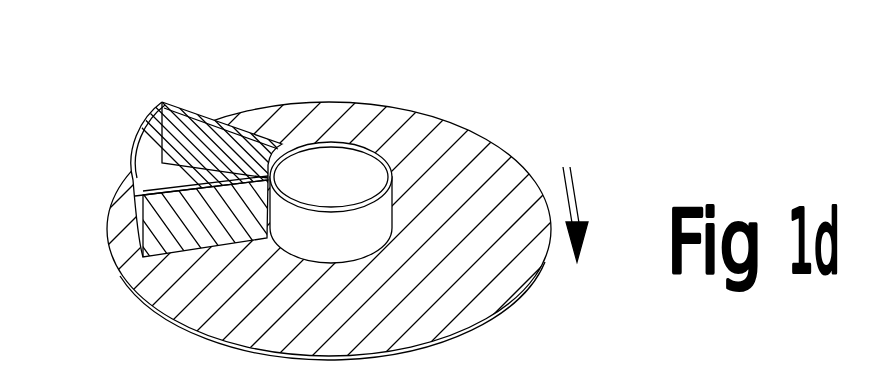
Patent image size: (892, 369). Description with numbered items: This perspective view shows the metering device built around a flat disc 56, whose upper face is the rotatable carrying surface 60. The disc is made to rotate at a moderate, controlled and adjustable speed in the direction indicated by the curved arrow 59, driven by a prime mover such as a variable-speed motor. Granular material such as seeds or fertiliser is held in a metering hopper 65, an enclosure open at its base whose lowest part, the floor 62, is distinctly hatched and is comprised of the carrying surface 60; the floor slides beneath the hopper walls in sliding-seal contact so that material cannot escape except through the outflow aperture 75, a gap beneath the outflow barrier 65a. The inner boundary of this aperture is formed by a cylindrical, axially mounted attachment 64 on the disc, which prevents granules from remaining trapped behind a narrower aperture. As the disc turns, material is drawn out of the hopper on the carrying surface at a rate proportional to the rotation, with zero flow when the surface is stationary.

The disc 56 is at (462, 146).
The carrying surface 60 is at (278, 300).
The floor 62 is at (206, 132).
The metering hopper 65 is at (142, 144).
The outflow barrier 65a is at (245, 119).
The outflow aperture 75 is at (203, 117).
The cylindrical axially mounted attachment 64 is at (387, 150).
The curved arrow 59 is at (578, 172).